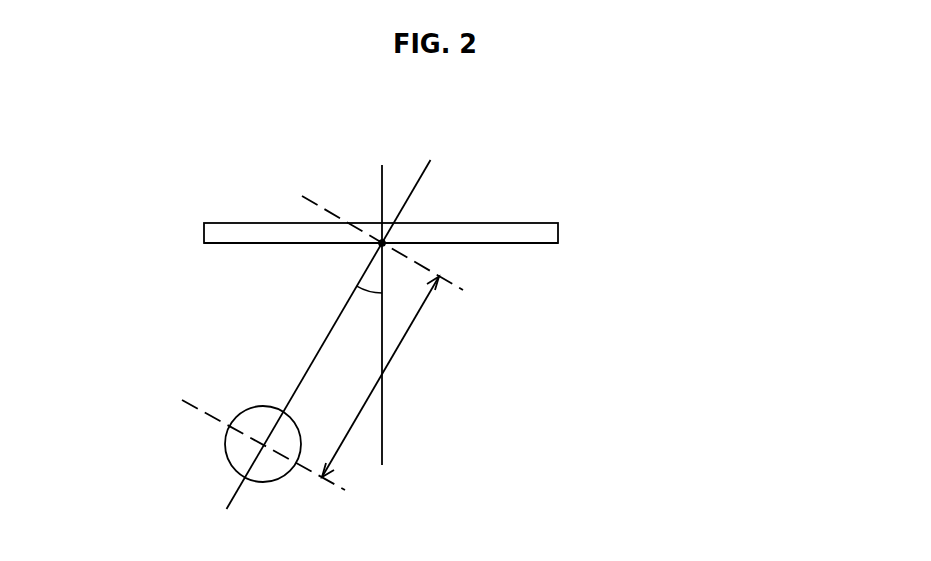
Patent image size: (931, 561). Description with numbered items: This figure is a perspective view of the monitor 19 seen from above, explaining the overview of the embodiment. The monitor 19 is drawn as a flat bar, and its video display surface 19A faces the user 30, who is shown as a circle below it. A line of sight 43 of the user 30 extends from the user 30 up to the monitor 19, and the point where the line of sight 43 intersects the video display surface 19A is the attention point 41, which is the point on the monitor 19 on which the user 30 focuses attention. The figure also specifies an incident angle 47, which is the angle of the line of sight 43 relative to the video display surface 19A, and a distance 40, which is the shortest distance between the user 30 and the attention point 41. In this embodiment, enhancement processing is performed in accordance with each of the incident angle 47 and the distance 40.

The monitor 19 is at (468, 223).
The video display surface 19A is at (517, 243).
The line of sight 43 is at (422, 180).
The attention point 41 is at (377, 247).
The incident angle 47 is at (368, 293).
The distance 40 is at (393, 357).
The user 30 is at (258, 480).